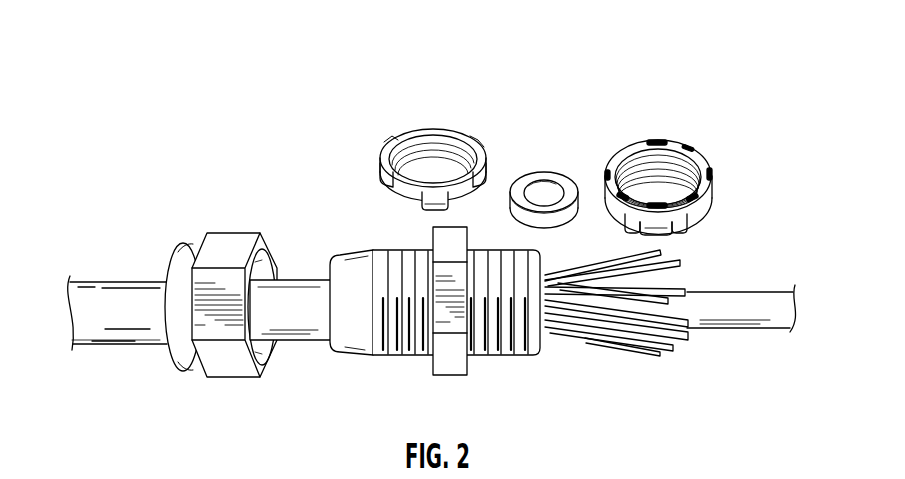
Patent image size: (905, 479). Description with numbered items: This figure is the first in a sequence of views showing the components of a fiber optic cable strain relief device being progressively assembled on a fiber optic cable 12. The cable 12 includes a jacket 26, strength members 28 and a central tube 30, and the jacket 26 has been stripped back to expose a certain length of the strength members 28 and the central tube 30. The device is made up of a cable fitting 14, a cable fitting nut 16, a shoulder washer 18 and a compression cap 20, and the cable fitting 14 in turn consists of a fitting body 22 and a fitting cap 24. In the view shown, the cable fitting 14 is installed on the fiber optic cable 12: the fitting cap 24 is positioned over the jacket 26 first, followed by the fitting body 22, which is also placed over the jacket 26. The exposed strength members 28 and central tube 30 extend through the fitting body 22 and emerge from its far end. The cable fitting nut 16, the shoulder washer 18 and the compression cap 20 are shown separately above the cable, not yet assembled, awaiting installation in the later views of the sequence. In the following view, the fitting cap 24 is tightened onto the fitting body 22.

The fiber optic cable 12 is at (143, 333).
The cable fitting 14 is at (302, 210).
The cable fitting nut 16 is at (440, 128).
The shoulder washer 18 is at (538, 172).
The compression cap 20 is at (672, 143).
The fitting body 22 is at (370, 357).
The fitting cap 24 is at (214, 233).
The jacket 26 is at (130, 282).
The strength members 28 is at (664, 349).
The central tube 30 is at (752, 292).